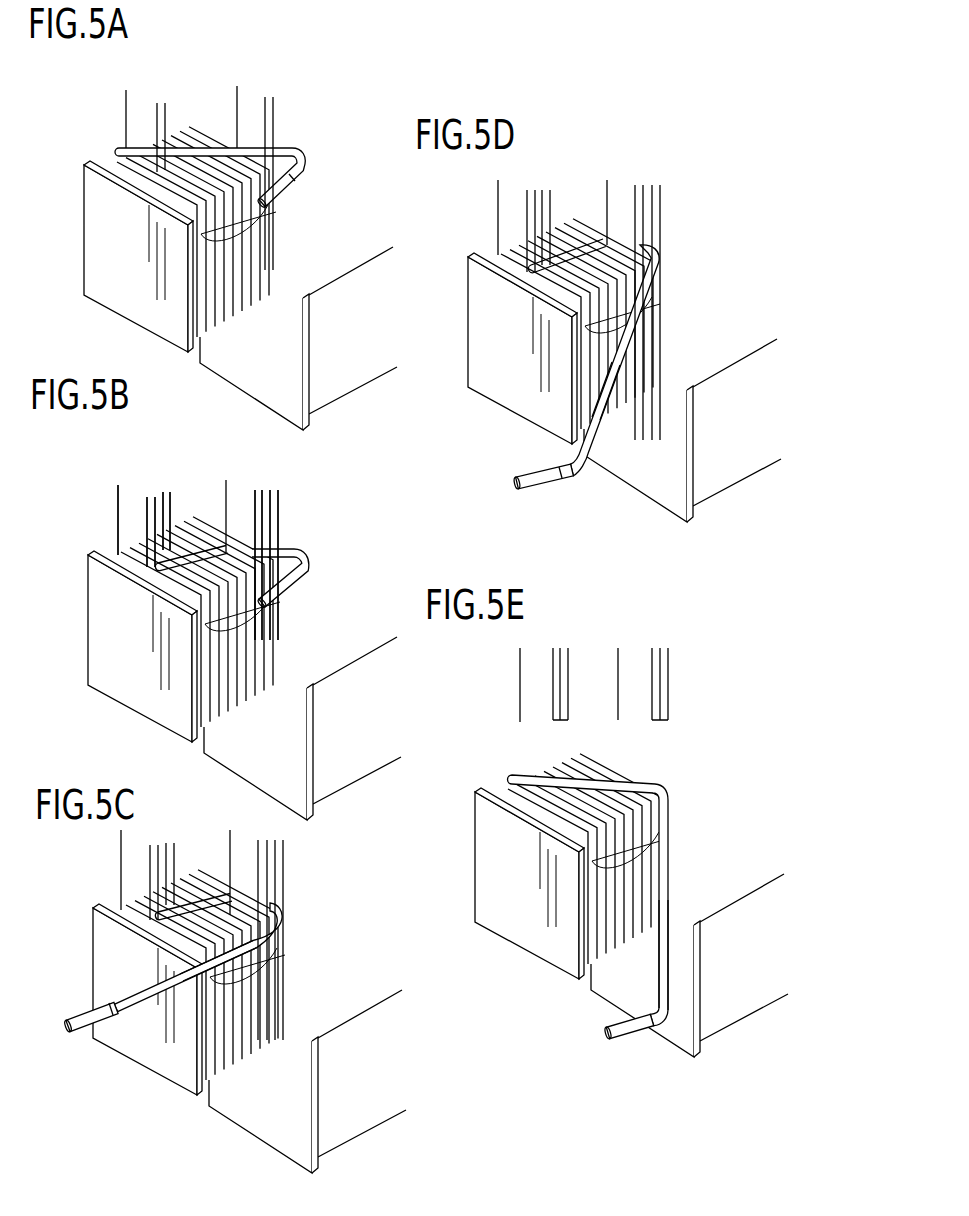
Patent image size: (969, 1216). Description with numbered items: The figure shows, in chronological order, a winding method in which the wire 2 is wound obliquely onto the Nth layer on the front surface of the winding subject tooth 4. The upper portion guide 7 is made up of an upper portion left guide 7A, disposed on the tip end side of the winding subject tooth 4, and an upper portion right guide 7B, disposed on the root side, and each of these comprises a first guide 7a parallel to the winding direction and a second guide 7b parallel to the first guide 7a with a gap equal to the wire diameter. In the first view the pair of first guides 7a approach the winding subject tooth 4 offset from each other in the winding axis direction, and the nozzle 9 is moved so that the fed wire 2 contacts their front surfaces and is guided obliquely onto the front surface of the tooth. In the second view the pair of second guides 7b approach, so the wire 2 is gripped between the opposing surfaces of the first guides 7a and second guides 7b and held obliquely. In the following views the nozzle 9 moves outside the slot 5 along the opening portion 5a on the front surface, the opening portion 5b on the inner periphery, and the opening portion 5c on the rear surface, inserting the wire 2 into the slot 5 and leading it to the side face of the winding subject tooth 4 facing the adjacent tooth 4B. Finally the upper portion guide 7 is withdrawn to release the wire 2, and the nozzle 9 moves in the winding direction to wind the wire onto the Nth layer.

In FIG. 5A, the wire 2 is at (116, 146).
In FIG. 5B, the wire 2 is at (215, 545).
In FIG. 5C, the wire 2 is at (170, 983).
In FIG. 5D, the wire 2 is at (640, 303).
In FIG. 5E, the wire 2 is at (662, 977).
In FIG. 5A, the winding subject tooth 4 is at (132, 298).
In FIG. 5B, the winding subject tooth 4 is at (128, 672).
In FIG. 5C, the winding subject tooth 4 is at (148, 1045).
In FIG. 5D, the winding subject tooth 4 is at (500, 387).
In FIG. 5E, the winding subject tooth 4 is at (532, 920).
In FIG. 5A, the adjacent tooth 4B is at (247, 372).
In FIG. 5B, the adjacent tooth 4B is at (240, 748).
In FIG. 5C, the adjacent tooth 4B is at (258, 1125).
In FIG. 5D, the adjacent tooth 4B is at (670, 485).
In FIG. 5E, the adjacent tooth 4B is at (688, 1055).
In FIG. 5C, the slot 5 is at (283, 946).
In FIG. 5D, the slot 5 is at (672, 286).
In FIG. 5E, the slot 5 is at (657, 820).
In FIG. 5C, the opening portion 5a is at (283, 953).
In FIG. 5D, the opening portion 5b is at (567, 390).
In FIG. 5E, the opening portion 5c is at (610, 953).
In FIG. 5C, the upper portion guide 7 is at (302, 853).
In FIG. 5D, the upper portion guide 7 is at (638, 165).
In FIG. 5E, the upper portion guide 7 is at (646, 634).
In FIG. 5B, the upper portion left guide 7A is at (152, 458).
In FIG. 5C, the upper portion left guide 7A is at (118, 870).
In FIG. 5D, the upper portion left guide 7A is at (488, 216).
In FIG. 5E, the upper portion left guide 7A is at (513, 690).
In FIG. 5B, the upper portion right guide 7B is at (322, 490).
In FIG. 5C, the upper portion right guide 7B is at (294, 880).
In FIG. 5D, the upper portion right guide 7B is at (672, 212).
In FIG. 5E, the upper portion right guide 7B is at (681, 680).
In FIG. 5A, the first guide 7a is at (158, 120).
In FIG. 5B, the first guide 7a is at (163, 493).
In FIG. 5B, the second guide 7b is at (126, 500).
In FIG. 5A, the nozzle 9 is at (283, 195).
In FIG. 5B, the nozzle 9 is at (290, 583).
In FIG. 5C, the nozzle 9 is at (102, 1030).
In FIG. 5D, the nozzle 9 is at (550, 480).
In FIG. 5E, the nozzle 9 is at (630, 1045).